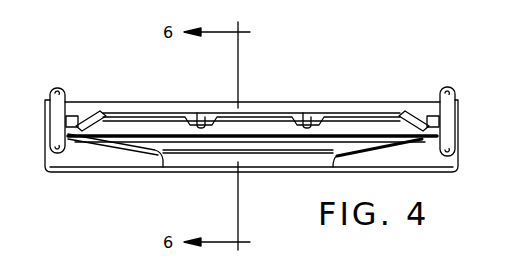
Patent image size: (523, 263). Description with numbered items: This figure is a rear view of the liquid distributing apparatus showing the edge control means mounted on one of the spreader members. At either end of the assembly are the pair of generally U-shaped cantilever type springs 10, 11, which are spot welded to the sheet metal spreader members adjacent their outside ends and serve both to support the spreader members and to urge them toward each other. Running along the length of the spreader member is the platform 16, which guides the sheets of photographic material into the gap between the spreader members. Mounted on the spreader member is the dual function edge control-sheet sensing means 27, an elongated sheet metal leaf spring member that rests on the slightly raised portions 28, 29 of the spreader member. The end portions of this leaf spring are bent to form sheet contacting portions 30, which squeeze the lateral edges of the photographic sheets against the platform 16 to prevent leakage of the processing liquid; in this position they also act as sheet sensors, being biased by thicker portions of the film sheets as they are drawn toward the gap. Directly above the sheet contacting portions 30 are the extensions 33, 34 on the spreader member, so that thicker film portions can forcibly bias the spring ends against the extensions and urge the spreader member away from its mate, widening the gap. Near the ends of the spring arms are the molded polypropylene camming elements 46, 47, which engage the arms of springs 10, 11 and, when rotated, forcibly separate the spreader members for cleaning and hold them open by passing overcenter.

The U-shaped spring 10 is at (451, 92).
The U-shaped spring 11 is at (57, 91).
The platform 16 is at (277, 145).
The edge control-sheet sensing means 27 is at (357, 113).
The raised portion 28 is at (198, 113).
The raised portion 29 is at (311, 113).
The sheet contacting portion 30 is at (85, 137).
The extension 33 is at (78, 128).
The extension 34 is at (428, 126).
The camming element 46 is at (439, 121).
The camming element 47 is at (78, 119).